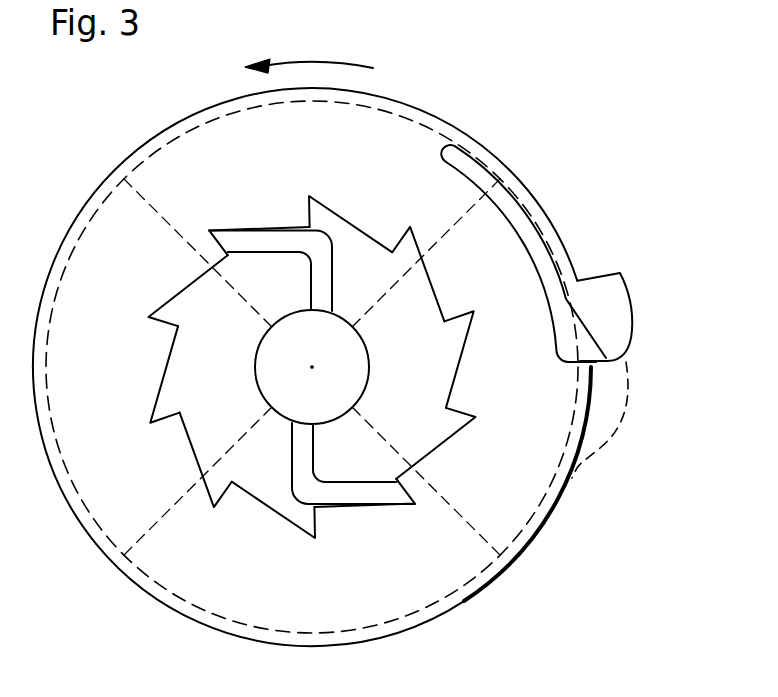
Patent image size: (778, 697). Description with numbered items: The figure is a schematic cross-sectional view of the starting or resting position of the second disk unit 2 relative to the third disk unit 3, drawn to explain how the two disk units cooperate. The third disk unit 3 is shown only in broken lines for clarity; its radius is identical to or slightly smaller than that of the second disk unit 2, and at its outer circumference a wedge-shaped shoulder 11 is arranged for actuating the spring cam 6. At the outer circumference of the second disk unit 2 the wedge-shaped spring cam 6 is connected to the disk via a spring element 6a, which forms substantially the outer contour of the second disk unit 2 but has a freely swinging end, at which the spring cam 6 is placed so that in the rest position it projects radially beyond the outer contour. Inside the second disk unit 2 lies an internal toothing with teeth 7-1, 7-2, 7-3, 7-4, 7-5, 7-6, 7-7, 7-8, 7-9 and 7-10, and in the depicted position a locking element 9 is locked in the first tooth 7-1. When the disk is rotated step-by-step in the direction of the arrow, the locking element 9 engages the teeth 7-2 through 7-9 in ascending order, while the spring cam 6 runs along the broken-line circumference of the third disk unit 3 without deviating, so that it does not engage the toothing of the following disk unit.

The second disk unit 2 is at (409, 99).
The third disk unit 3 is at (176, 128).
The spring cam 6 is at (620, 318).
The spring element 6a is at (527, 194).
The first tooth 7-1 is at (217, 230).
The tooth 7-2 is at (318, 207).
The tooth 7-3 is at (410, 241).
The tooth 7-4 is at (462, 328).
The tooth 7-5 is at (455, 420).
The tooth 7-6 is at (406, 508).
The tooth 7-7 is at (306, 522).
The tooth 7-8 is at (201, 481).
The tooth 7-9 is at (158, 412).
The tooth 7-10 is at (166, 312).
The locking element 9 is at (257, 249).
The wedge-shaped shoulder 11 is at (607, 395).